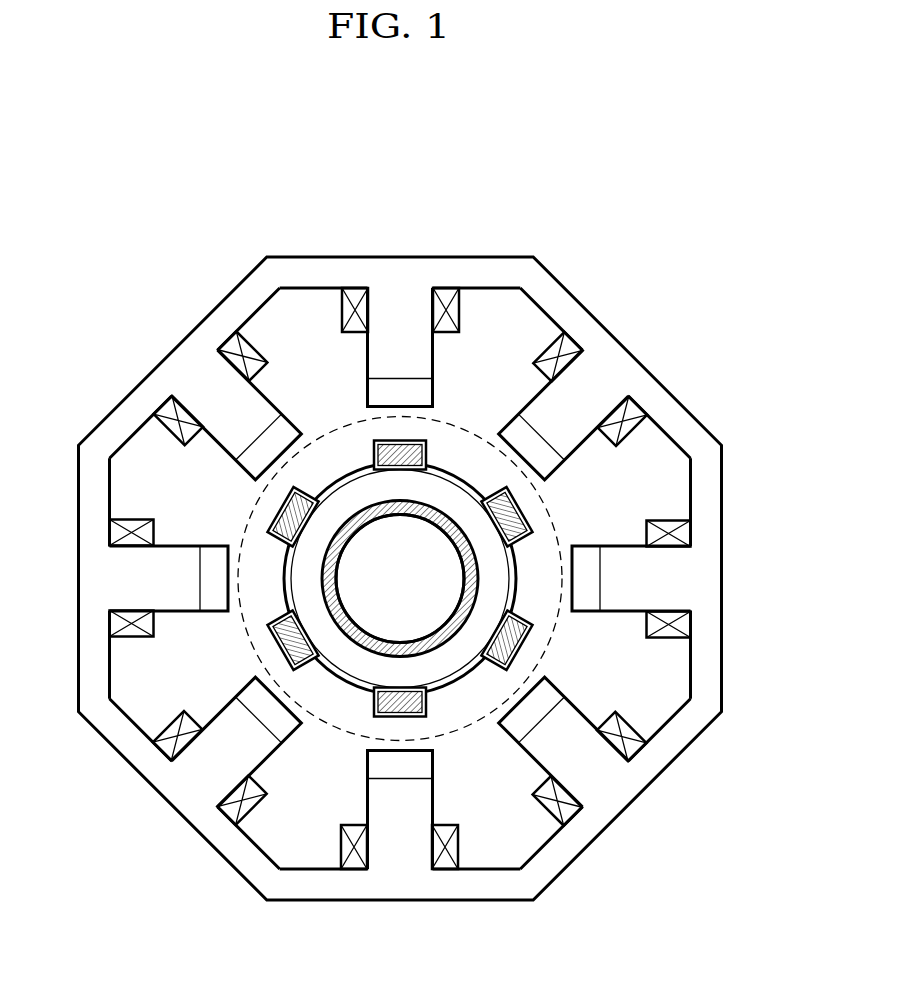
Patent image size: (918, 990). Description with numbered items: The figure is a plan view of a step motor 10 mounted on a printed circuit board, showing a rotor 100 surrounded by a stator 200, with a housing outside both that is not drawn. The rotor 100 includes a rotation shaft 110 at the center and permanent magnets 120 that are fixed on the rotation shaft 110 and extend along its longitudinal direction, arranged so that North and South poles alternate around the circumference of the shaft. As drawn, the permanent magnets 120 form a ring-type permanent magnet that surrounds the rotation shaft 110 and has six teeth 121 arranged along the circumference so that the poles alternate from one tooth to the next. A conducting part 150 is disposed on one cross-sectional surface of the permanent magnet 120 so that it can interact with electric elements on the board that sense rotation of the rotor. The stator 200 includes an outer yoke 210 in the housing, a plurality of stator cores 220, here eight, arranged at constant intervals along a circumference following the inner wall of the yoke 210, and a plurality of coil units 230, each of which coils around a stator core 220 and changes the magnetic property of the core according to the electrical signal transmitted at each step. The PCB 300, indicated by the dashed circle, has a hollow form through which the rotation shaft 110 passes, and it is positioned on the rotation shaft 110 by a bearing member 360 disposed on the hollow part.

The step motor 10 is at (717, 248).
The rotor 100 is at (458, 690).
The rotation shaft 110 is at (390, 617).
The permanent magnets 120 is at (267, 635).
The teeth 121 is at (396, 720).
The conducting part 150 is at (512, 515).
The stator 200 is at (582, 296).
The yoke 210 is at (332, 268).
The stator cores 220 is at (392, 356).
The coil units 230 is at (447, 302).
The PCB 300 is at (250, 523).
The bearing member 360 is at (323, 573).